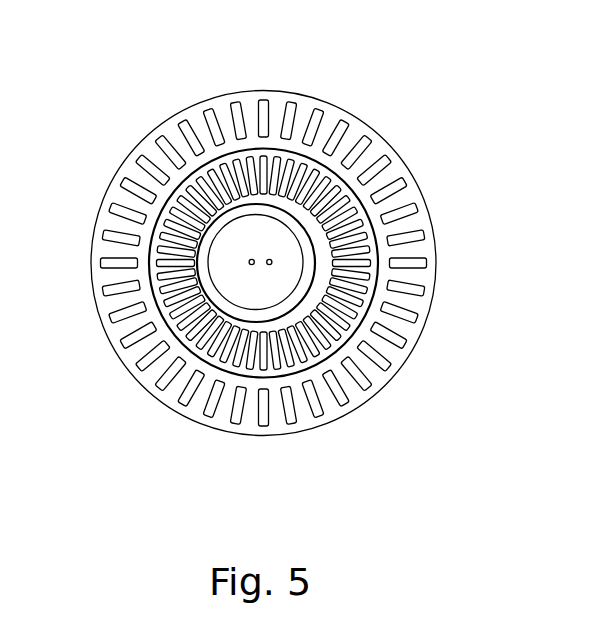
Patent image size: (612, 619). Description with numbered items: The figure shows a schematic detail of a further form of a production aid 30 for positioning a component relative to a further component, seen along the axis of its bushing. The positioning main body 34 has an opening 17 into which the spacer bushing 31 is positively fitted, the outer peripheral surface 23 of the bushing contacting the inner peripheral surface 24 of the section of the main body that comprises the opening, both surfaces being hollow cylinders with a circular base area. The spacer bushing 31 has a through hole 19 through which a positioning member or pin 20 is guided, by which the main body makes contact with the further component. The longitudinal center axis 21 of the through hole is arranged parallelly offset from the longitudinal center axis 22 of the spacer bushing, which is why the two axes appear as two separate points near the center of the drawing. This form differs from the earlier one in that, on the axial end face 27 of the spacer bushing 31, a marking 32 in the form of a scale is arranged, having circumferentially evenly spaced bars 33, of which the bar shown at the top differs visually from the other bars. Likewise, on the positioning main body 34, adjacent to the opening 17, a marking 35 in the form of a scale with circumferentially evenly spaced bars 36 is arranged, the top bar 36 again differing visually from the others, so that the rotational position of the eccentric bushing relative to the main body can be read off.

The opening 17 is at (426, 204).
The through hole 19 is at (245, 293).
The positioning member or pin 20 is at (238, 335).
The longitudinal center axis of the through hole 21 is at (252, 258).
The longitudinal center axis of the spacer bushing 22 is at (269, 258).
The outer peripheral surface 23 is at (183, 172).
The inner peripheral surface 24 is at (158, 225).
The axial end face 27 is at (372, 342).
The production aid 30 is at (494, 214).
The spacer bushing 31 is at (382, 273).
The marking 32 is at (166, 278).
The bars 33 is at (172, 318).
The positioning main body 34 is at (364, 127).
The marking 35 is at (340, 386).
The bars 36 is at (300, 412).